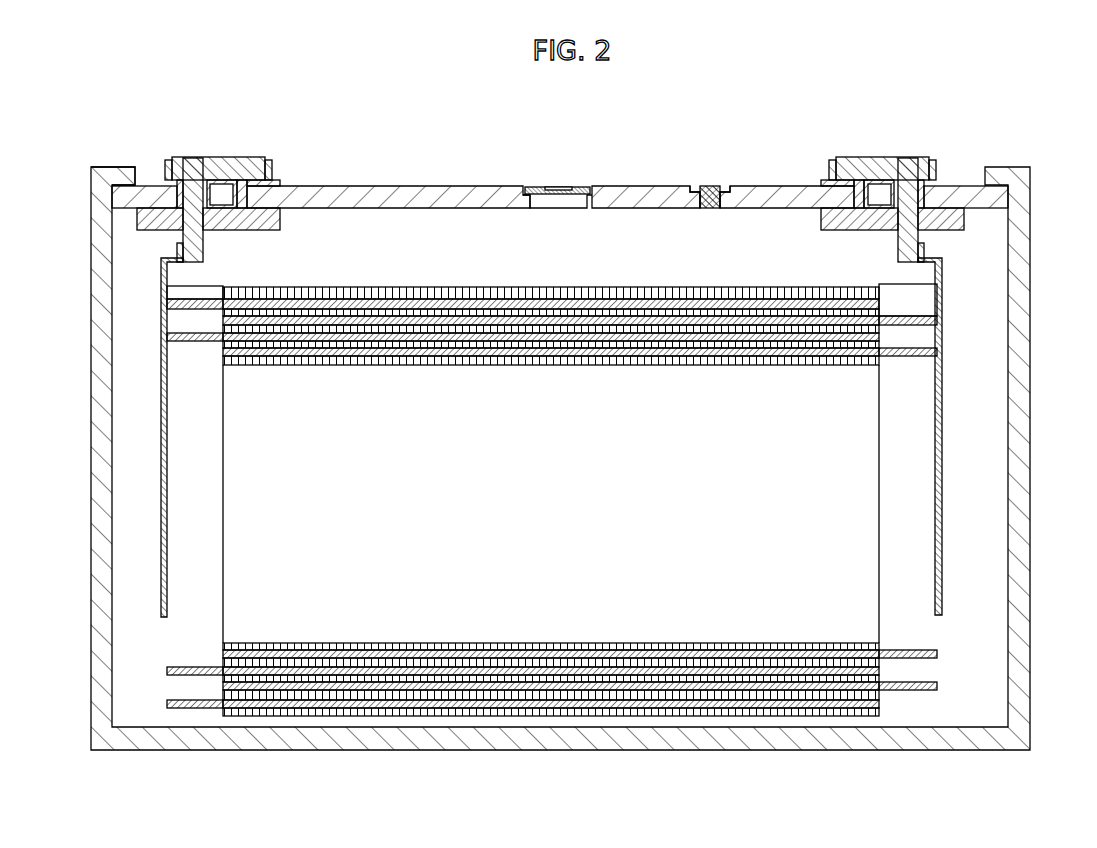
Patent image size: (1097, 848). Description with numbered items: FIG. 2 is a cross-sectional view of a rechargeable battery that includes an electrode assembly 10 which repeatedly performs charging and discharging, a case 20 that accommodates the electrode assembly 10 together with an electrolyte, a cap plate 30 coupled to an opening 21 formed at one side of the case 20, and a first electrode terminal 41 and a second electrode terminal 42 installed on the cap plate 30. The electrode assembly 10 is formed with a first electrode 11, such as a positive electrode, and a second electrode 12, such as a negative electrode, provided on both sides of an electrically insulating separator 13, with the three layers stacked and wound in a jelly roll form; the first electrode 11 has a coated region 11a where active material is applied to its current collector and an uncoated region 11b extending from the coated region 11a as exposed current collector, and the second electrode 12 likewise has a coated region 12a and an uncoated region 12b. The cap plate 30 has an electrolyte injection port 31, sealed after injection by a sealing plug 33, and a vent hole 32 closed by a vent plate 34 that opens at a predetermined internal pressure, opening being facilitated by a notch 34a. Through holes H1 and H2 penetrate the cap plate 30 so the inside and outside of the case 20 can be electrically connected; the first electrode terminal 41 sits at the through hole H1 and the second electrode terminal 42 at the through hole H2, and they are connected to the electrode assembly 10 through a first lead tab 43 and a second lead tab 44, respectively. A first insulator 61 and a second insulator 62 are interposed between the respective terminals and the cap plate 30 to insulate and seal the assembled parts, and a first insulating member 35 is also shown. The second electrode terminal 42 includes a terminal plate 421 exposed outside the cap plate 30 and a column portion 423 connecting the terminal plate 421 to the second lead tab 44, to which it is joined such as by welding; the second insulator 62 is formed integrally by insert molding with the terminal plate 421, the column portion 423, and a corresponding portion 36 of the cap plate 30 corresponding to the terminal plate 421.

The electrode assembly 10 is at (552, 558).
The first electrode 11 is at (580, 556).
The coated region 11a is at (812, 688).
The uncoated region 11b is at (906, 539).
The second electrode 12 is at (523, 559).
The coated region 12a is at (297, 703).
The uncoated region 12b is at (204, 541).
The separator 13 is at (535, 710).
The case 20 is at (1018, 463).
The opening 21 is at (118, 193).
The cap plate 30 is at (642, 185).
The electrolyte injection port 31 is at (698, 188).
The vent hole 32 is at (523, 205).
The sealing plug 33 is at (710, 187).
The vent plate 34 is at (573, 188).
The notch 34a is at (547, 187).
The first insulating member 35 is at (840, 197).
The corresponding portion 36 is at (260, 197).
The first electrode terminal 41 is at (888, 167).
The second electrode terminal 42 is at (180, 182).
The terminal plate 421 is at (255, 160).
The column portion 423 is at (183, 236).
The first lead tab 43 is at (942, 540).
The second lead tab 44 is at (160, 417).
The first insulator 61 is at (932, 160).
The second insulator 62 is at (168, 160).
The through hole H1 is at (940, 197).
The through hole H2 is at (242, 197).